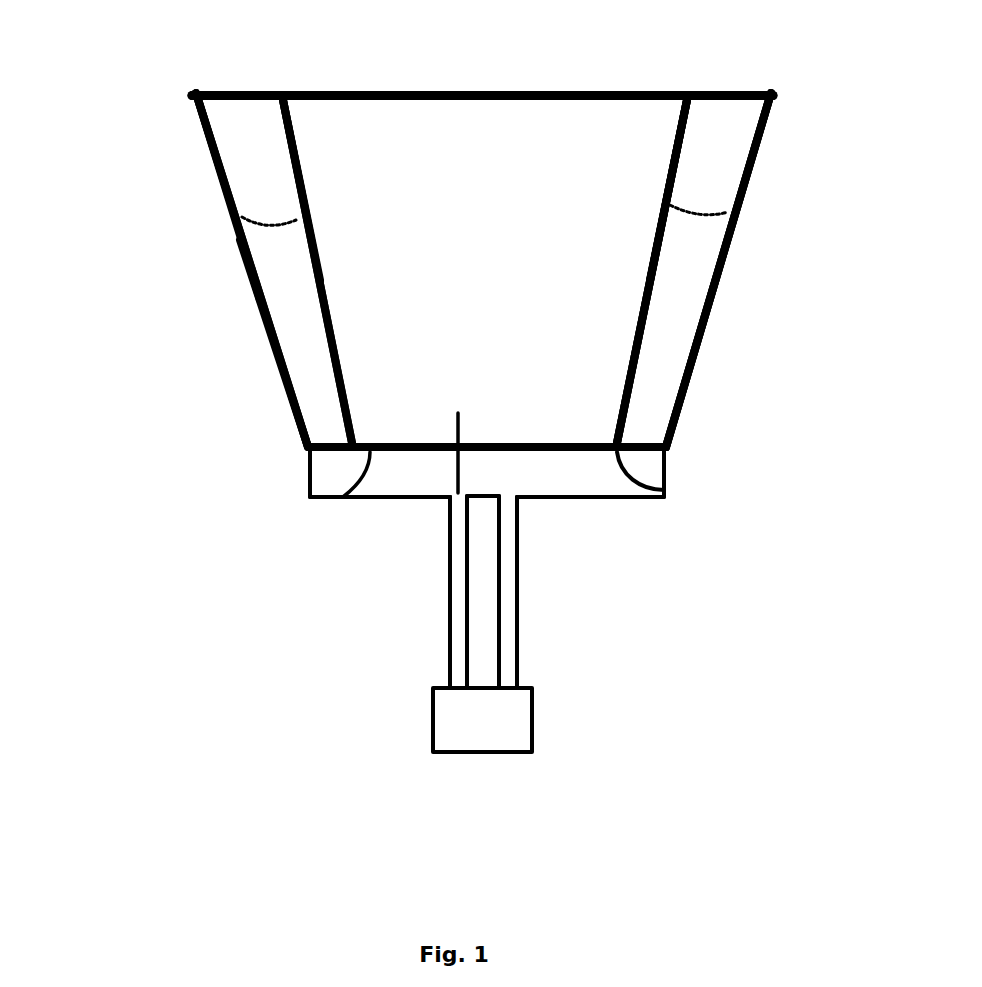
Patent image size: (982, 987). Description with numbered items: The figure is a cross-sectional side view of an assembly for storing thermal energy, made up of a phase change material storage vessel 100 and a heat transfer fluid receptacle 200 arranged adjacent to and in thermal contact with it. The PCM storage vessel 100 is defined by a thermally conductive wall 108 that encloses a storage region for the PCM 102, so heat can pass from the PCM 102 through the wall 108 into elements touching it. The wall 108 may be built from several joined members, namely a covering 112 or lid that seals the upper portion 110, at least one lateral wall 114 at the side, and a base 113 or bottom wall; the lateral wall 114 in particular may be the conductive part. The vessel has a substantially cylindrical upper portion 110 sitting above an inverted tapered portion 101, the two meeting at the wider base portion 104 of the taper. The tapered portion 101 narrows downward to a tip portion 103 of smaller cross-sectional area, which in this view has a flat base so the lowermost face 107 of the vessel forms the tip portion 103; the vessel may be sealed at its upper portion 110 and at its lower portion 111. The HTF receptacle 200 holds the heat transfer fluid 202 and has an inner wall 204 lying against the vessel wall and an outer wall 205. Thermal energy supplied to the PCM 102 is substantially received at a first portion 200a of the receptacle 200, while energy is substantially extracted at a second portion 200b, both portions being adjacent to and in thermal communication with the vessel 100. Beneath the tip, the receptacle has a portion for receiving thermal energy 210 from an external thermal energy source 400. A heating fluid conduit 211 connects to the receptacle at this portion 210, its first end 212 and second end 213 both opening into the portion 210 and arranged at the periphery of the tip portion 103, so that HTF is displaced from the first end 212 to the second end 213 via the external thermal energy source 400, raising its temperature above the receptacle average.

The PCM storage vessel 100 is at (455, 74).
The inverted tapered portion 101 is at (640, 302).
The PCM 102 is at (487, 266).
The tip portion 103 is at (666, 497).
The base portion 104 is at (653, 92).
The lowermost face 107 is at (403, 452).
The thermally conductive wall 108 is at (350, 413).
The upper portion 110 is at (558, 86).
The lower portion 111 is at (710, 432).
The covering 112 is at (355, 93).
The base 113 is at (343, 497).
The lateral wall 114 is at (657, 270).
The HTF receptacle 200 is at (192, 84).
The first portion 200a is at (423, 497).
The second portion 200b is at (270, 343).
The heat transfer fluid 202 is at (311, 294).
The inner wall 204 is at (283, 130).
The outer wall 205 is at (237, 242).
The portion for receiving thermal energy 210 is at (480, 476).
The heating fluid conduit 211 is at (453, 643).
The first end 212 is at (507, 493).
The second end 213 is at (461, 441).
The external thermal energy source 400 is at (483, 753).